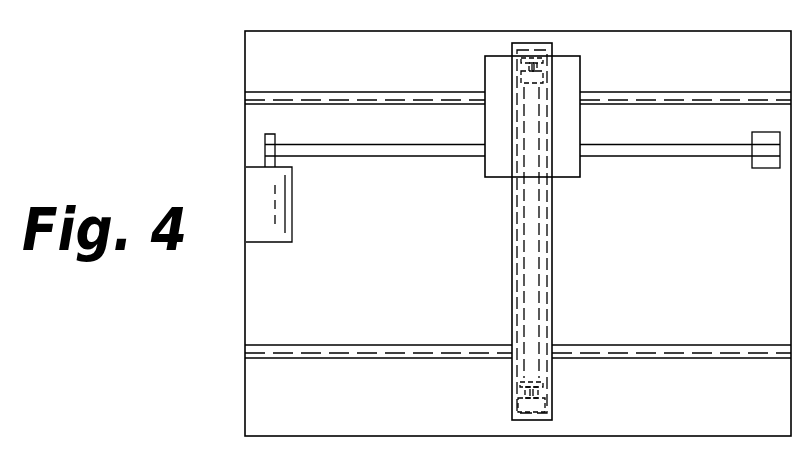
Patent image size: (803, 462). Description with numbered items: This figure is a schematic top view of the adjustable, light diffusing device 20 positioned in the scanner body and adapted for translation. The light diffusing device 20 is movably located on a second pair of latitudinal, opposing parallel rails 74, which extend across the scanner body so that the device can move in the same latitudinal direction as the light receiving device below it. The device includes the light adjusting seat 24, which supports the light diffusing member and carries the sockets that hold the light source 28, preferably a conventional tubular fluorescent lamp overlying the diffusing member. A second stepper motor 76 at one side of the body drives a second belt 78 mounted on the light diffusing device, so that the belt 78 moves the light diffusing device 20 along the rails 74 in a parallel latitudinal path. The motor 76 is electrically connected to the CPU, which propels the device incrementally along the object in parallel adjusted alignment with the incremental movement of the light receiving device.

The adjustable, light diffusing device 20 is at (512, 275).
The light adjusting seat 24 is at (548, 217).
The light source 28 is at (540, 258).
The second pair of latitudinal, opposing parallel rails 74 is at (695, 98).
The second stepper motor 76 is at (283, 215).
The second belt 78 is at (423, 147).